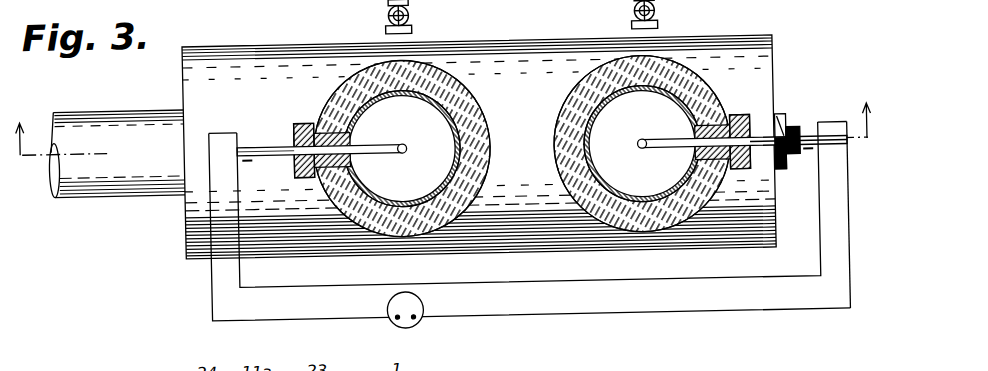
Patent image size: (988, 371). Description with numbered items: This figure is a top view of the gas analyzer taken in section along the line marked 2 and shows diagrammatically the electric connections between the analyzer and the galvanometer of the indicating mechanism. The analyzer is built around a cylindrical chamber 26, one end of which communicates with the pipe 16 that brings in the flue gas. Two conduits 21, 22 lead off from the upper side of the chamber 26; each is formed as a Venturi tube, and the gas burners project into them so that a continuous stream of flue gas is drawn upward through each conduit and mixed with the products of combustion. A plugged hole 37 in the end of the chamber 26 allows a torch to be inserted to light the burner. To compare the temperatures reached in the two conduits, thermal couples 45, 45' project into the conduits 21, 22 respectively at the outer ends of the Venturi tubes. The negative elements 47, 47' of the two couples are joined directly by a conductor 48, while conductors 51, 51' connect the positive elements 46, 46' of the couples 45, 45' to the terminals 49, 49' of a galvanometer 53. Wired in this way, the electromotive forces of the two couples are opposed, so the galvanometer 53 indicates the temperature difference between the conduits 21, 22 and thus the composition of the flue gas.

The section line 2- 2 is at (443, 124).
The pipe 16 is at (136, 108).
The conduit 21 is at (436, 138).
The conduit 22 is at (590, 160).
The cylindrical chamber 26 is at (257, 48).
The plugged hole 37 is at (779, 127).
The thermal couple 45 is at (325, 133).
The thermal couple 45' is at (742, 125).
The positive element 46 is at (308, 141).
The positive element 46' is at (728, 125).
The negative element 47 is at (243, 162).
The negative element 47' is at (792, 154).
The conductor 48 is at (642, 266).
The terminal 49 is at (371, 306).
The terminal 49' is at (444, 303).
The conductor 51 is at (508, 221).
The conductor 51' is at (832, 227).
The galvanometer 53 is at (409, 330).